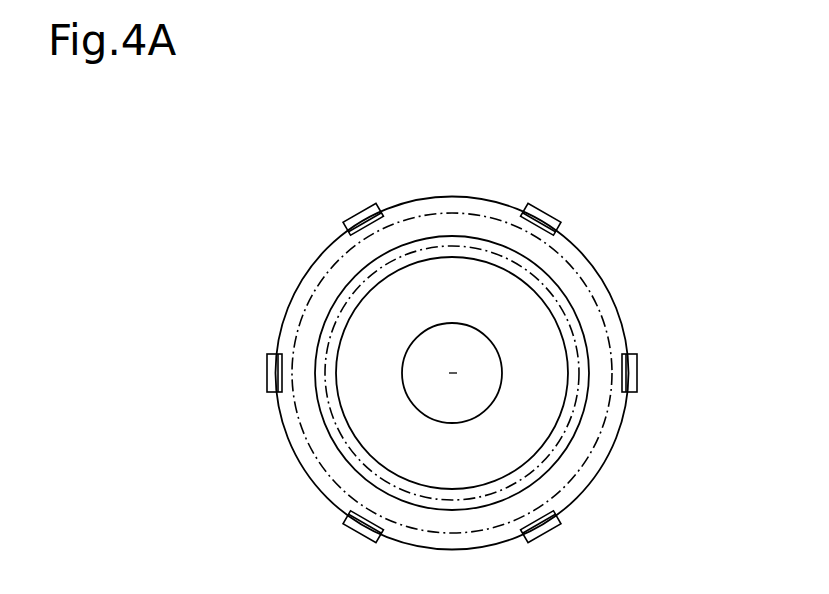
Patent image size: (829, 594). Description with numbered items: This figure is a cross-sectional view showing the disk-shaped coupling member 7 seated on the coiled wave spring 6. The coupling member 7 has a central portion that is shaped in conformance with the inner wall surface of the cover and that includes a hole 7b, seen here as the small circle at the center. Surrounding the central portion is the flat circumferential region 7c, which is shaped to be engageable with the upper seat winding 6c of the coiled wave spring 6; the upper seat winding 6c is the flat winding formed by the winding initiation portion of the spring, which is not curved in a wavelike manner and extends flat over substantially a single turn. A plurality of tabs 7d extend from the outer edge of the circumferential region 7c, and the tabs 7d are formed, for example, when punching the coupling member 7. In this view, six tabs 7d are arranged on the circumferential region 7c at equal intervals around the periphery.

The coiled wave spring 6 is at (443, 208).
The upper seat winding 6c is at (590, 262).
The coupling member 7 is at (377, 327).
The hole 7b is at (425, 387).
The circumferential region 7c is at (582, 330).
The tabs 7d is at (355, 218).